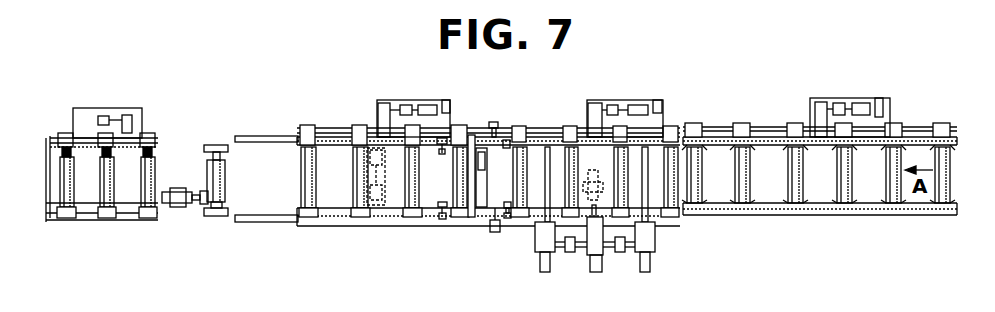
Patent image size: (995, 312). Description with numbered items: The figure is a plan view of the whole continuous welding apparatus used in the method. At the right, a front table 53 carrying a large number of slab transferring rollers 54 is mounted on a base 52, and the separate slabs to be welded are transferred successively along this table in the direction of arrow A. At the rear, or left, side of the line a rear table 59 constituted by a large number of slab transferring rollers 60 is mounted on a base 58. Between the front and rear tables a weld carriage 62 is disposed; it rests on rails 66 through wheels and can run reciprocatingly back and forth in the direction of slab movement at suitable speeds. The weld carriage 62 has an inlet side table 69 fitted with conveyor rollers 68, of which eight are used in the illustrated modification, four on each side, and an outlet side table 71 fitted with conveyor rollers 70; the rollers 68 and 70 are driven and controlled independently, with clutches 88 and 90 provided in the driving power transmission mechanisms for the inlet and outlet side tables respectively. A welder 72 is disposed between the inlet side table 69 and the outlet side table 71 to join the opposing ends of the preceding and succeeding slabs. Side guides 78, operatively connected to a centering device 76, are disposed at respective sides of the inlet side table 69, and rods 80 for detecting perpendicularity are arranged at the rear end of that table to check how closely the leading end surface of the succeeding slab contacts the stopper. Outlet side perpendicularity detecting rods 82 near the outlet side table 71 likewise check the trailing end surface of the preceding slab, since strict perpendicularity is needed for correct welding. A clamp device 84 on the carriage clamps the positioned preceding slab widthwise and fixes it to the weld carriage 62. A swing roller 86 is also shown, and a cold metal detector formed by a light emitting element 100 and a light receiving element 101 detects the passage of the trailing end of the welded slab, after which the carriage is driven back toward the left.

The base 52 is at (823, 195).
The front table 53 is at (769, 166).
The slab transferring rollers 54 is at (700, 185).
The base 58 is at (88, 200).
The rear table 59 is at (126, 166).
The slab transferring rollers 60 is at (108, 218).
The weld carriage 62 is at (418, 220).
The rails 66 is at (260, 222).
The conveyor rollers 68 is at (523, 214).
The inlet side table 69 is at (659, 160).
The conveyor rollers 70 is at (353, 185).
The outlet side table 71 is at (334, 160).
The welder 72 is at (470, 135).
The centering device 76 is at (599, 248).
The side guides 78 is at (547, 147).
The rods for detecting perpendicularity 80 is at (506, 140).
The outlet side perpendicularity detecting rods 82 is at (441, 137).
The clamp device 84 is at (376, 208).
The swing roller 86 is at (217, 218).
The clutch 88 is at (614, 105).
The clutch 90 is at (403, 105).
The light emitting element 100 is at (496, 233).
The light receiving element 101 is at (493, 122).